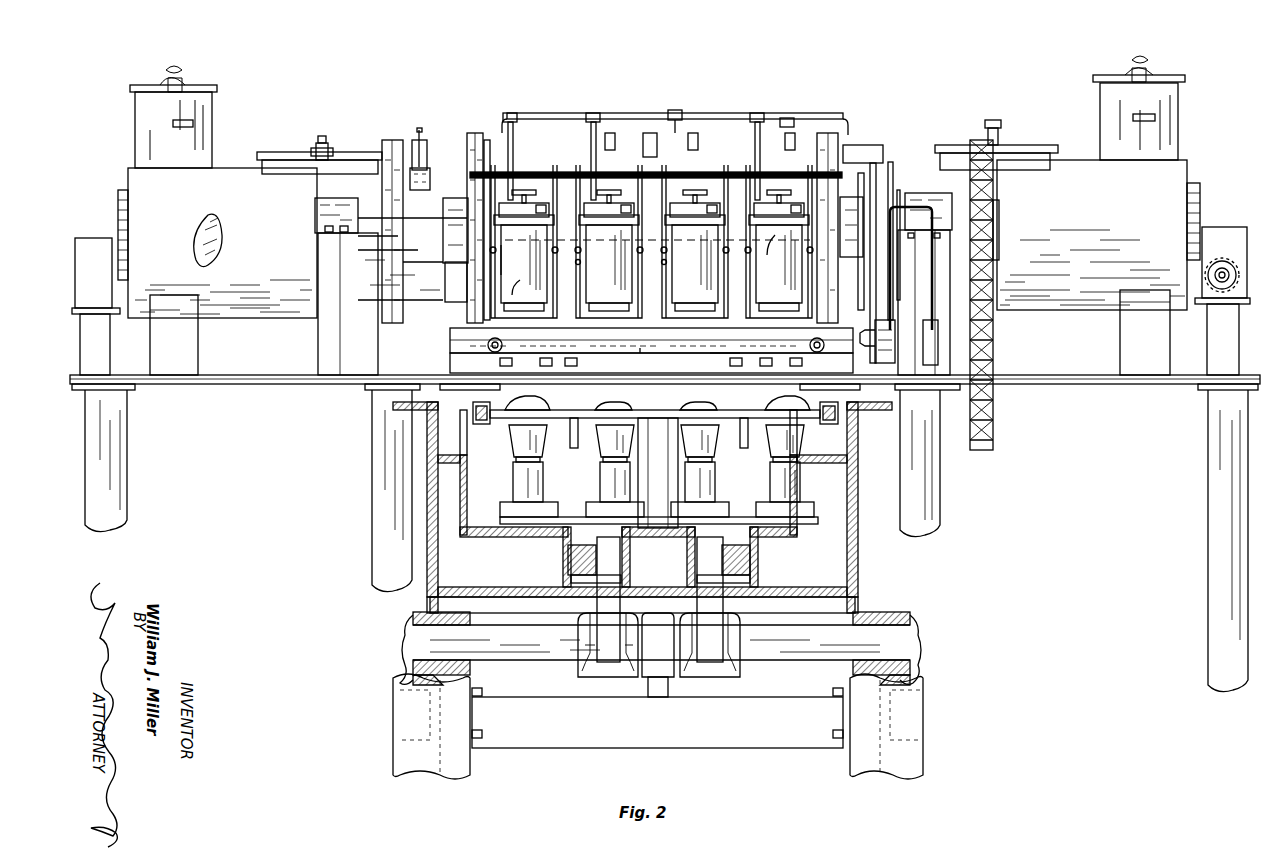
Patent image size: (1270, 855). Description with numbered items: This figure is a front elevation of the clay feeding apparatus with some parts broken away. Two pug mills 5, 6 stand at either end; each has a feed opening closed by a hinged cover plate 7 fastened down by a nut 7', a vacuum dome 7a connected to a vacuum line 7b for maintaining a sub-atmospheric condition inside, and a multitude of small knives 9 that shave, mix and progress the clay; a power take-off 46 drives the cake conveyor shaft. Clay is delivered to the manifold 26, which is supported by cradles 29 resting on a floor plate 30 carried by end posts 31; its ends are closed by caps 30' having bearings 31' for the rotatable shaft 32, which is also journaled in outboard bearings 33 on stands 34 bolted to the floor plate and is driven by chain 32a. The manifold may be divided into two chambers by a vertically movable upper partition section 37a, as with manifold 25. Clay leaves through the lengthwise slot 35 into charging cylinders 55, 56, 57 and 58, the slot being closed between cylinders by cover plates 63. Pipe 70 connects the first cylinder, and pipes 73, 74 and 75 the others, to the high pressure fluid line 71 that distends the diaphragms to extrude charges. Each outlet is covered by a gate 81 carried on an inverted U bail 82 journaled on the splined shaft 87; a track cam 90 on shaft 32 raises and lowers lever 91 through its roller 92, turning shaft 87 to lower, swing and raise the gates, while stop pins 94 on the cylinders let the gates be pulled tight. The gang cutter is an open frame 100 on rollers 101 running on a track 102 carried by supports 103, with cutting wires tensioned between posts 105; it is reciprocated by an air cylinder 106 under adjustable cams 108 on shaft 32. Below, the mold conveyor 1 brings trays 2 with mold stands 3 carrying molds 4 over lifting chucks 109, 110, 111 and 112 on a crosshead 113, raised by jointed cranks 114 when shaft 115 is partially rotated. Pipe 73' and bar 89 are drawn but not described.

The mold conveyor 1 is at (487, 398).
The tray 2 is at (735, 415).
The mold stand 3 is at (548, 160).
The mold 4 is at (545, 398).
The pug mill 5 is at (250, 318).
The pug mill 6 is at (1040, 310).
The hinged cover plate 7 is at (657, 146).
The nut 7' is at (661, 129).
The vacuum dome 7a is at (213, 120).
The vacuum line 7b is at (173, 121).
The knives 9 is at (220, 222).
The manifold 25 is at (698, 140).
The manifold 26 is at (787, 128).
The cradle 29 is at (585, 366).
The floor plate 30 is at (665, 388).
The cap 30' is at (660, 220).
The end post 31 is at (666, 541).
The block 31' is at (651, 249).
The shaft 32 is at (443, 215).
The chain 32a is at (993, 440).
The outboard bearing 33 is at (320, 200).
The stand 34 is at (320, 345).
The slot 35 is at (771, 251).
The upper partition section 37a is at (662, 113).
The power take-off 46 is at (1222, 258).
The charging cylinder 55 is at (524, 249).
The charging cylinder 56 is at (605, 322).
The charging cylinder 57 is at (692, 322).
The charging cylinder 58 is at (779, 249).
The cover plate 63 is at (584, 238).
The pipe 70 is at (518, 128).
The high pressure fluid line 71 is at (550, 113).
The pipe 73 is at (588, 156).
The pipe 73' is at (860, 263).
The pipe 74 is at (657, 127).
The pipe 75 is at (755, 132).
The gate 81 is at (518, 288).
The bail 82 is at (496, 278).
The splined shaft 87 is at (428, 178).
The bar 89 is at (488, 150).
The track cam 90 is at (392, 140).
The lever 91 is at (420, 128).
The roller 92 is at (415, 140).
The stop pin 94 is at (580, 262).
The open frame 100 is at (450, 342).
The roller 101 is at (484, 357).
The track 102 is at (640, 353).
The support 103 is at (848, 360).
The post 105 is at (725, 340).
The air cylinder 106 is at (875, 325).
The adjustable cam 108 is at (893, 167).
The mold lifting chuck 109 is at (548, 438).
The mold lifting chuck 110 is at (598, 432).
The mold lifting chuck 111 is at (714, 446).
The mold lifting chuck 112 is at (773, 447).
The crosshead 113 is at (808, 537).
The jointed crank 114 is at (577, 580).
The shaft 115 is at (785, 625).